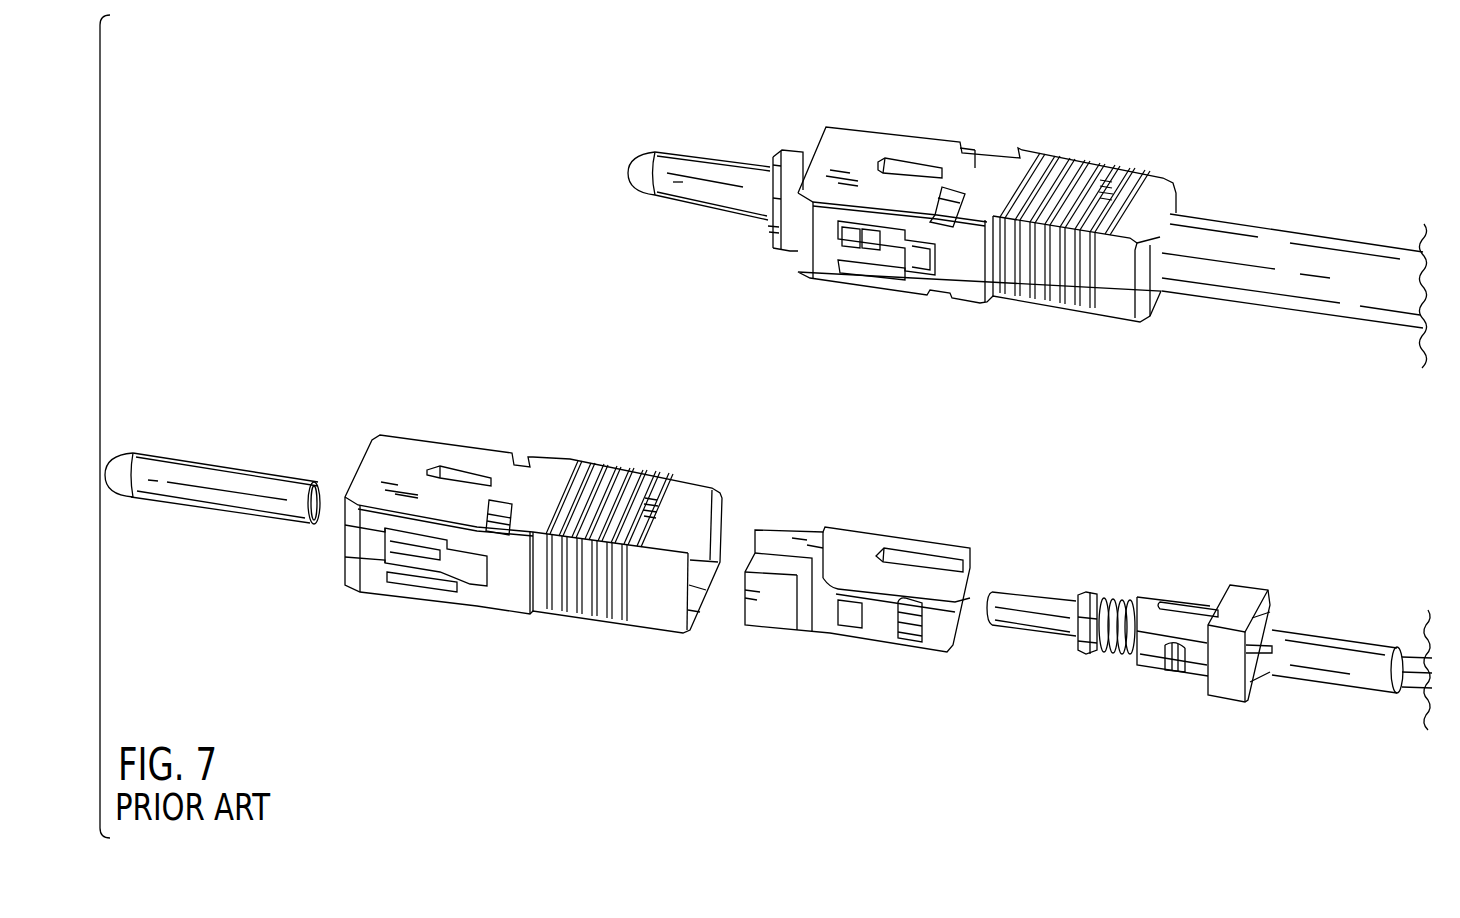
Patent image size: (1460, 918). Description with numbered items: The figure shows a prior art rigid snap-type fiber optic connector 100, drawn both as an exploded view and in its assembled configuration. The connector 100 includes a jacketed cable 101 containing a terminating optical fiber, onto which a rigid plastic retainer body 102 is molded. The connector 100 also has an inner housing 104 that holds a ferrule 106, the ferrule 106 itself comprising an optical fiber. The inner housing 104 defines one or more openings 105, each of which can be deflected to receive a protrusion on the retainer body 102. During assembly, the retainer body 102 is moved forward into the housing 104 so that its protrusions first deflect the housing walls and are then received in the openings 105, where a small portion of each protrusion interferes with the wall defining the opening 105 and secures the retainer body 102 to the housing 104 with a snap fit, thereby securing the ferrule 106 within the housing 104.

The connector 100 is at (1207, 74).
The jacketed cable 101 is at (1420, 650).
The retainer body 102 is at (1302, 697).
The inner housing 104 is at (807, 650).
The opening 105 is at (893, 622).
The ferrule 106 is at (1033, 632).